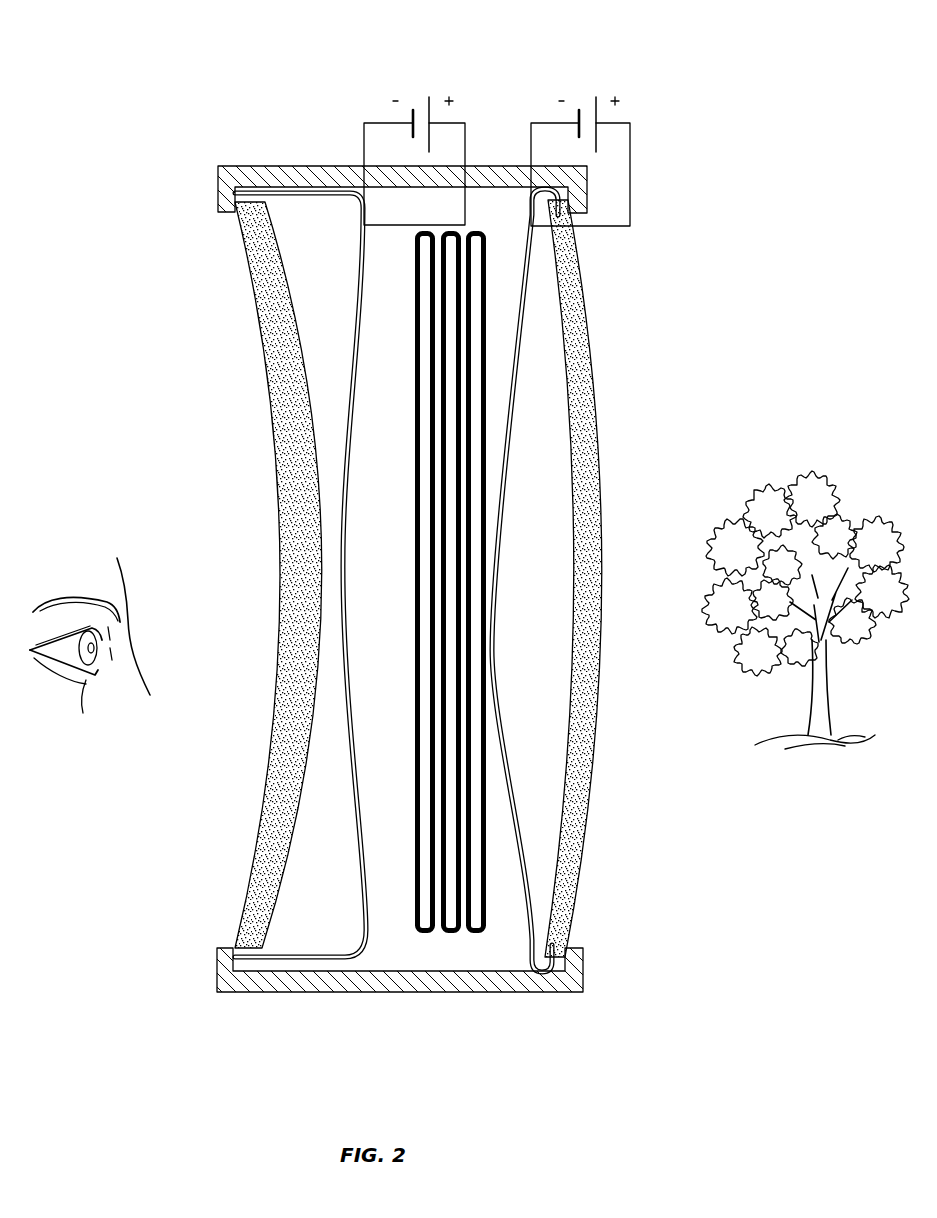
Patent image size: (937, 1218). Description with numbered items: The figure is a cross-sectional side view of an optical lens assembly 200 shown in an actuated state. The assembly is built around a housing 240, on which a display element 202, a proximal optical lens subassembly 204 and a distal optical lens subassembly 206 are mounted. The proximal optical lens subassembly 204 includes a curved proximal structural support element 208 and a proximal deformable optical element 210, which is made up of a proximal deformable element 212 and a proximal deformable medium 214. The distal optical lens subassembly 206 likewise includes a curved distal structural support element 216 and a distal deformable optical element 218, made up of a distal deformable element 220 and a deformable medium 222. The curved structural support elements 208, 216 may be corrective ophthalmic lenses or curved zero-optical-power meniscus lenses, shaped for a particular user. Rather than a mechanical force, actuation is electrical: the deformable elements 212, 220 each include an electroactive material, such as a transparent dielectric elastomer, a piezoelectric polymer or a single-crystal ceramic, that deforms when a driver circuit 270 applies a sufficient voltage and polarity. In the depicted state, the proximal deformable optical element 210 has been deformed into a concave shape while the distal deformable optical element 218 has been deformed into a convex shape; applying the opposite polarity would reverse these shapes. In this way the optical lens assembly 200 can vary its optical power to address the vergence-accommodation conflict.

The optical lens assembly 200 is at (178, 32).
The display element 202 is at (442, 948).
The proximal optical lens subassembly 204 is at (198, 790).
The distal optical lens subassembly 206 is at (603, 845).
The proximal structural support element 208 is at (278, 312).
The proximal deformable optical element 210 is at (226, 575).
The proximal deformable element 212 is at (348, 418).
The proximal deformable medium 214 is at (328, 530).
The distal structural support element 216 is at (583, 320).
The distal deformable optical element 218 is at (646, 580).
The distal deformable element 220 is at (505, 448).
The deformable medium 222 is at (702, 390).
The housing 240 is at (328, 985).
The driver circuit 270 is at (420, 85).